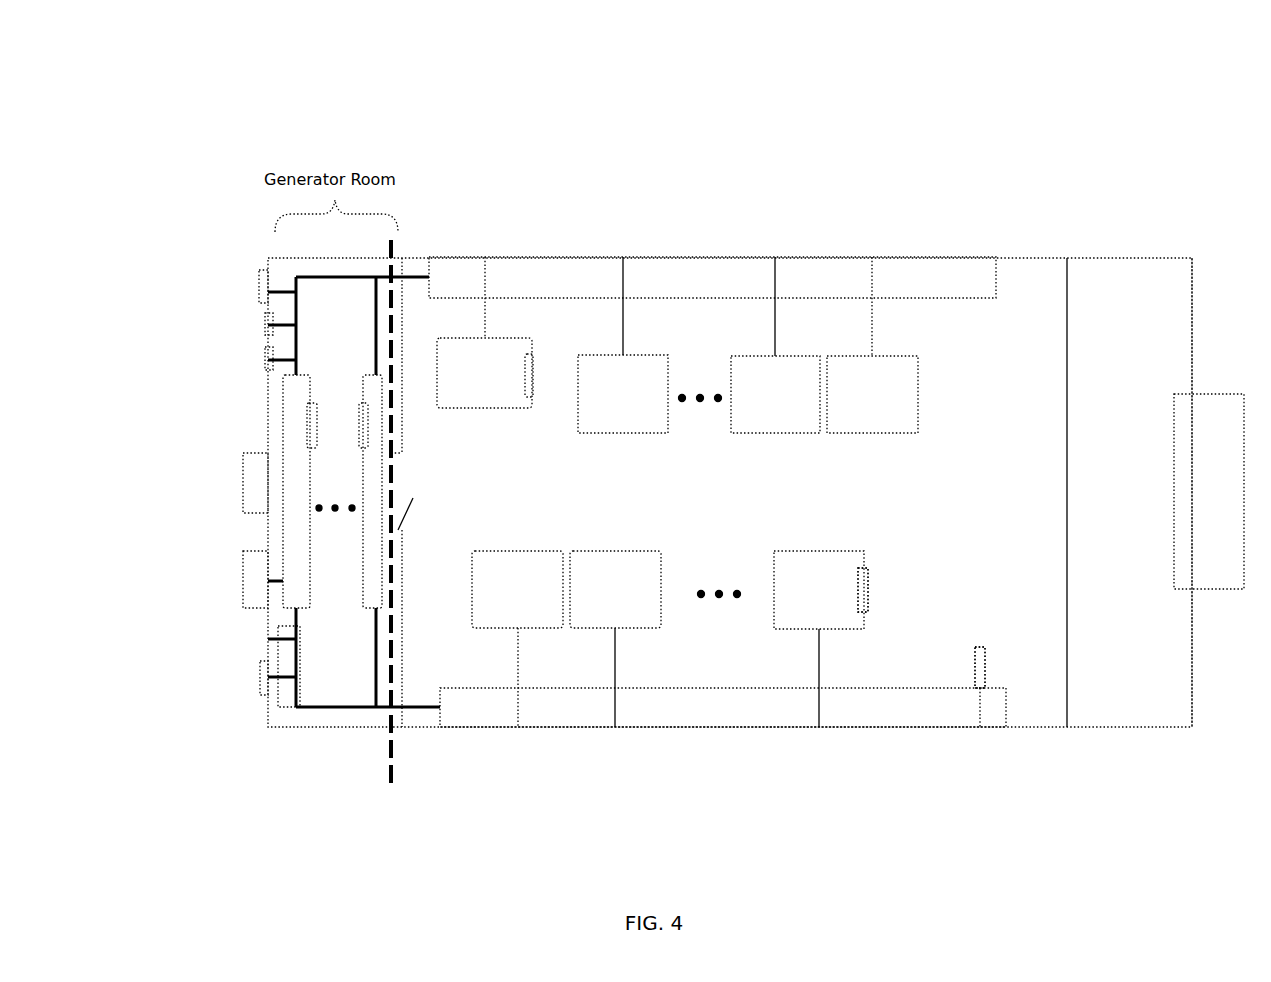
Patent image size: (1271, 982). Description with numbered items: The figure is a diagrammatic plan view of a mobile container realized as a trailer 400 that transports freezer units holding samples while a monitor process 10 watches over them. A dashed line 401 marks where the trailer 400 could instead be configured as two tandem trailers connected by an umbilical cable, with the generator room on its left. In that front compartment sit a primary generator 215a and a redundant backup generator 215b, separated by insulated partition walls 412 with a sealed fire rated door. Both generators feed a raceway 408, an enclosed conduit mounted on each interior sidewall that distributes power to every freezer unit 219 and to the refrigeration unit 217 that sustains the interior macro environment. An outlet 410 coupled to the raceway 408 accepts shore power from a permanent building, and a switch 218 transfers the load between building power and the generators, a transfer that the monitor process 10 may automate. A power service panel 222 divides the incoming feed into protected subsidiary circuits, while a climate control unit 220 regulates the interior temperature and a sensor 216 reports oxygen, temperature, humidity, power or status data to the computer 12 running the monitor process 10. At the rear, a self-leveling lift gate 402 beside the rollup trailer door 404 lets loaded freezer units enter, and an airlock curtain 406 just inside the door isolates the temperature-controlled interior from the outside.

The trailer 400 is at (112, 30).
The monitor process 10 is at (866, 576).
The computer 12 is at (246, 578).
The generator 215a is at (305, 600).
The generator 215b is at (365, 385).
The sensor 216 is at (362, 430).
The refrigeration unit 217 is at (490, 352).
The switch 218 is at (262, 360).
The freezer unit 219 is at (614, 420).
The climate control unit 220 is at (248, 470).
The power service panel 222 is at (265, 323).
The dashed line 401 is at (396, 744).
The lift gate 402 is at (1240, 403).
The rollup trailer door 404 is at (1178, 570).
The airlock curtain 406 is at (1066, 530).
The raceway 408 is at (997, 278).
The outlet 410 is at (258, 283).
The partition walls 412 is at (401, 357).